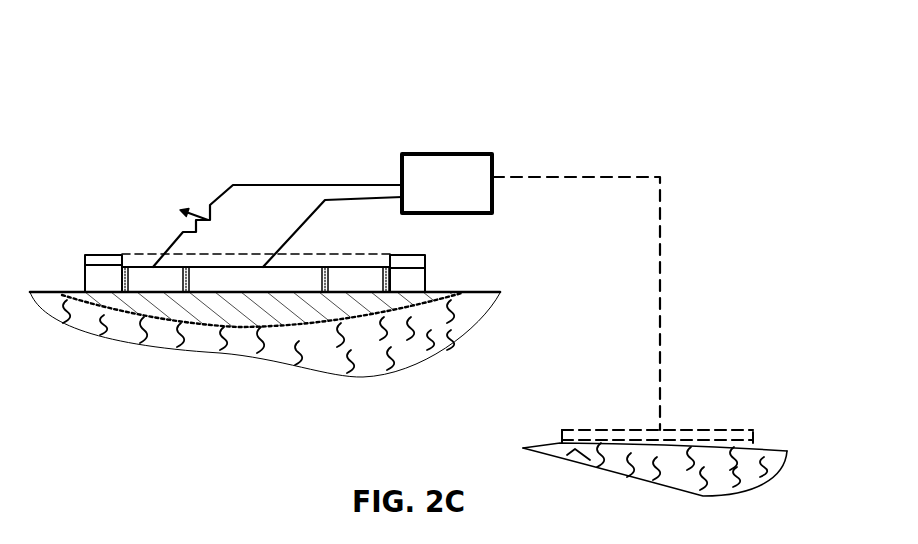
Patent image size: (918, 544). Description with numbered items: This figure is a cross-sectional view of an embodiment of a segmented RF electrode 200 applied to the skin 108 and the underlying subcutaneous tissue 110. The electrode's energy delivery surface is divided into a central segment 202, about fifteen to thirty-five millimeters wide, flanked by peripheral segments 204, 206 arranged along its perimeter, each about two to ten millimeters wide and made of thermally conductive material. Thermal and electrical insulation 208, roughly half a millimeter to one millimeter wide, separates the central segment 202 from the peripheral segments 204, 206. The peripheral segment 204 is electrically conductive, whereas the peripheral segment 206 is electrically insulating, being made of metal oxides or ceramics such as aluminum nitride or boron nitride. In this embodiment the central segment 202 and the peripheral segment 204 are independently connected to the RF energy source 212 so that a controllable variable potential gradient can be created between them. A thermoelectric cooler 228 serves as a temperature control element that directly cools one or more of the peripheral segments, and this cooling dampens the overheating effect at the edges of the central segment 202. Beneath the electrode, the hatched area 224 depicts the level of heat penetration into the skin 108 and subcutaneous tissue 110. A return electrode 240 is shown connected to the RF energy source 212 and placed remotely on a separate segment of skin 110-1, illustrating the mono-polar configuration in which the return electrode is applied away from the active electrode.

The skin 108 is at (483, 292).
The subcutaneous tissue 110 is at (257, 347).
The segment of skin 110-1 is at (610, 460).
The segmented RF electrode 200 is at (245, 215).
The central segment 202 is at (218, 270).
The peripheral segment 204 is at (143, 277).
The peripheral segment 206 is at (95, 280).
The thermal and electrical insulation 208 is at (327, 267).
The RF energy source 212 is at (467, 197).
The hatched area 224 is at (120, 303).
The thermoelectric cooler 228 is at (413, 258).
The return electrode 240 is at (695, 430).